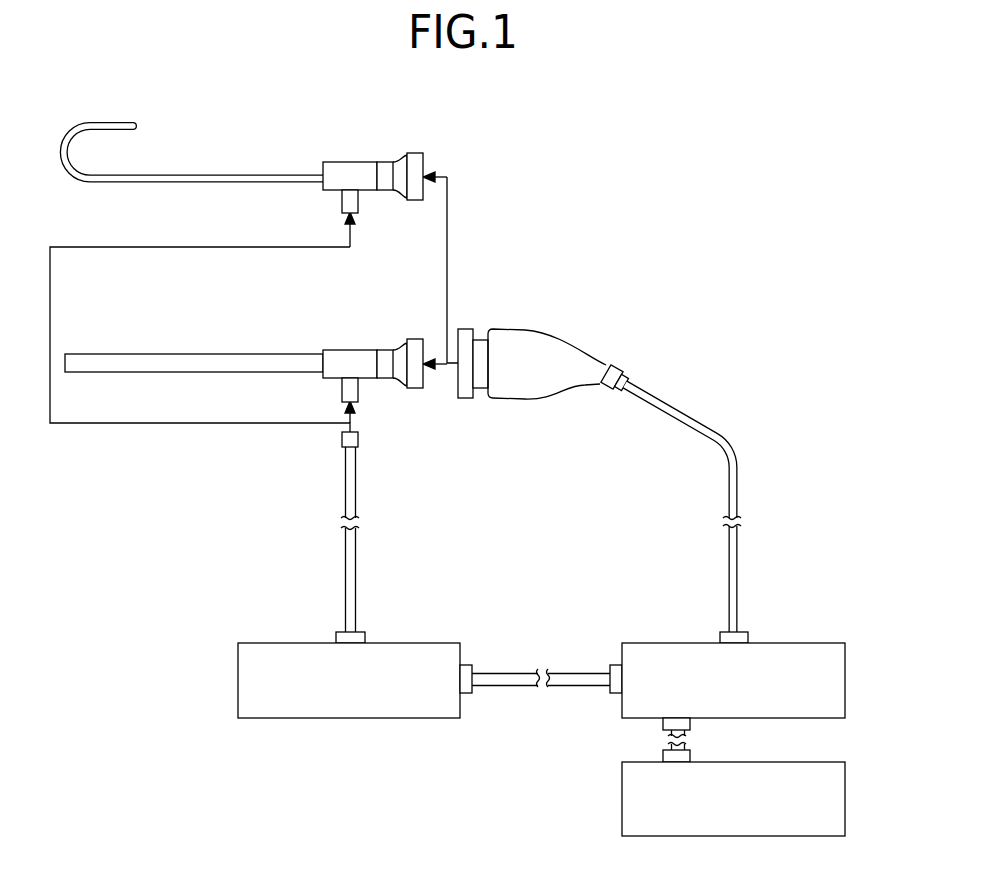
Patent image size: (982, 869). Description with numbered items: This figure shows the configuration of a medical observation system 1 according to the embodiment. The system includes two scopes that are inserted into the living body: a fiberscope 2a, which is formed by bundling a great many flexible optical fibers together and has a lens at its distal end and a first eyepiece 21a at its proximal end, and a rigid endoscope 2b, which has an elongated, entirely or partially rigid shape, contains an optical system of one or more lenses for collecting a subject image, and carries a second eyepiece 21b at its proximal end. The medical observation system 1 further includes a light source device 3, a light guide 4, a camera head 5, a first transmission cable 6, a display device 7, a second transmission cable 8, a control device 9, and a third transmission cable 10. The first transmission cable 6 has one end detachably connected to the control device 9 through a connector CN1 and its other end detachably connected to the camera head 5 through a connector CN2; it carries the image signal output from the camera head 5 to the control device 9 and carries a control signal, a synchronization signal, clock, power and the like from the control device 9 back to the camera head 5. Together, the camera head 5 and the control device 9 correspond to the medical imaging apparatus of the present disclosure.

The medical observation system 1 is at (694, 268).
The fiberscope 2a is at (245, 172).
The rigid endoscope 2b is at (195, 352).
The first eyepiece 21a is at (415, 160).
The second eyepiece 21b is at (415, 347).
The light source device 3 is at (403, 643).
The light guide 4 is at (345, 583).
The camera head 5 is at (507, 345).
The first transmission cable 6 is at (738, 483).
The display device 7 is at (789, 762).
The second transmission cable 8 is at (672, 744).
The control device 9 is at (788, 643).
The third transmission cable 10 is at (583, 672).
The connector CN1 is at (743, 632).
The connector CN2 is at (617, 390).